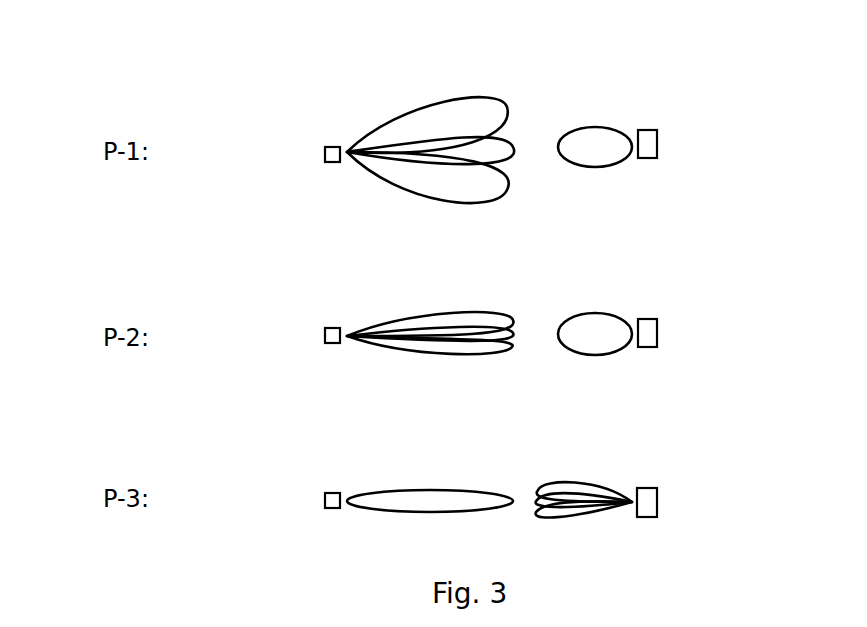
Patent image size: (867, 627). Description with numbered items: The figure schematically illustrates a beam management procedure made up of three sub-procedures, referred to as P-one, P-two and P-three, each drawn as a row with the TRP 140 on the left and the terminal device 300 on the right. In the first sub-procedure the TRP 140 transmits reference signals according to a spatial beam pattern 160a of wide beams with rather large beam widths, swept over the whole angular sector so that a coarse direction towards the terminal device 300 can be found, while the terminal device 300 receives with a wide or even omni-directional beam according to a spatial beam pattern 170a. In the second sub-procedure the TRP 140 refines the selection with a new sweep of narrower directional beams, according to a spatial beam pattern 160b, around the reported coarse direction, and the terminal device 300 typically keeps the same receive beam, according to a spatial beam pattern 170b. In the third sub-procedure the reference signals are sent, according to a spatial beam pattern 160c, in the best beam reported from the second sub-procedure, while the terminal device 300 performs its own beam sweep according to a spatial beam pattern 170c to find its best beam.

The TRP 140 is at (325, 155).
The terminal device 300 is at (657, 143).
The spatial beam pattern 160a is at (408, 97).
The spatial beam pattern 160b is at (407, 305).
The spatial beam pattern 160c is at (407, 482).
The spatial beam pattern 170a is at (600, 113).
The spatial beam pattern 170b is at (600, 303).
The spatial beam pattern 170c is at (574, 471).